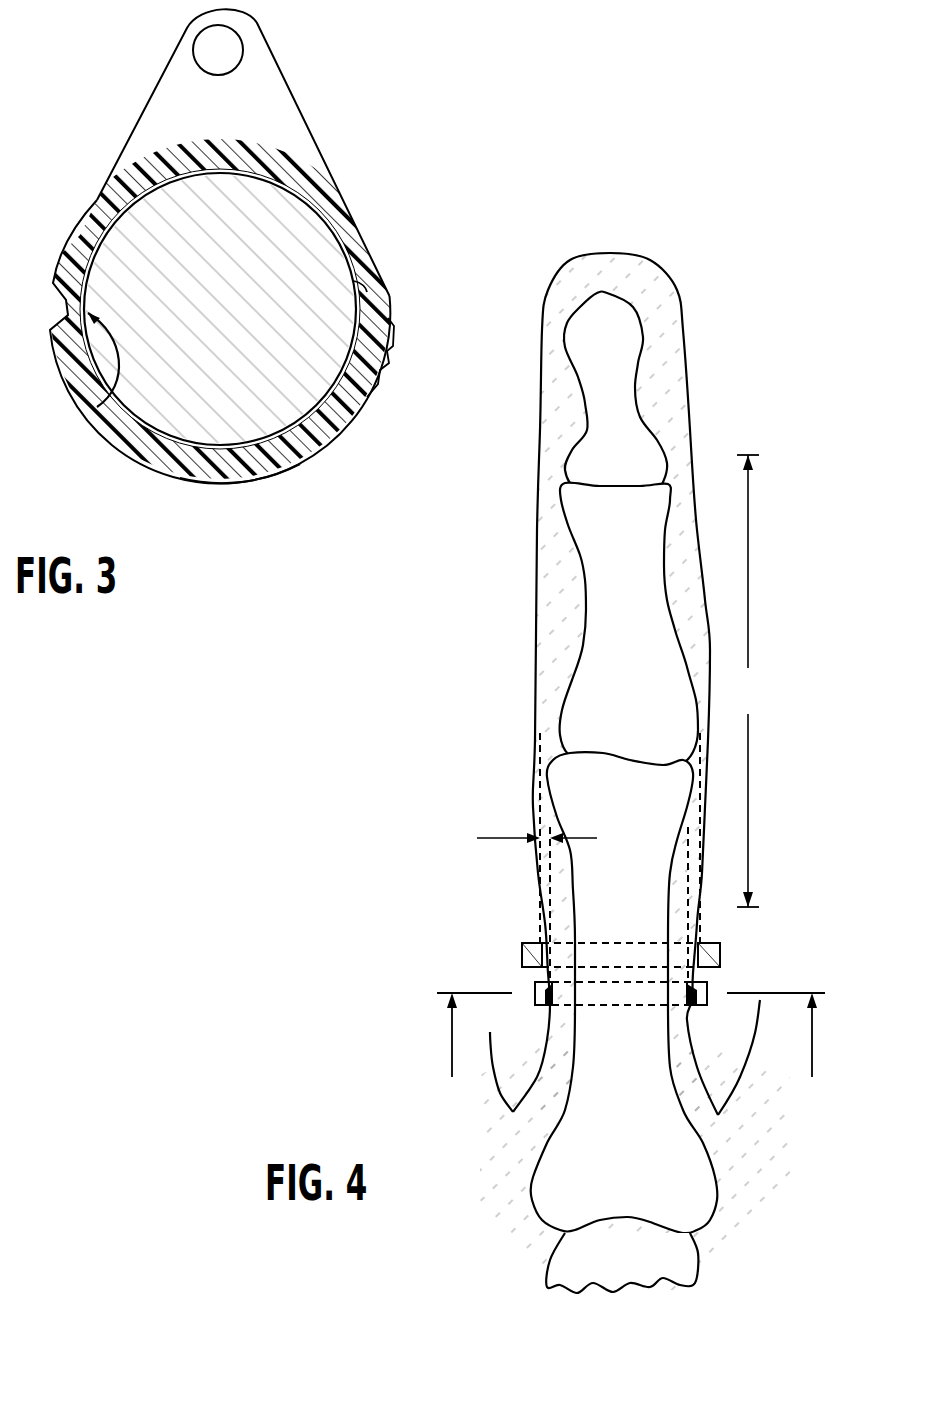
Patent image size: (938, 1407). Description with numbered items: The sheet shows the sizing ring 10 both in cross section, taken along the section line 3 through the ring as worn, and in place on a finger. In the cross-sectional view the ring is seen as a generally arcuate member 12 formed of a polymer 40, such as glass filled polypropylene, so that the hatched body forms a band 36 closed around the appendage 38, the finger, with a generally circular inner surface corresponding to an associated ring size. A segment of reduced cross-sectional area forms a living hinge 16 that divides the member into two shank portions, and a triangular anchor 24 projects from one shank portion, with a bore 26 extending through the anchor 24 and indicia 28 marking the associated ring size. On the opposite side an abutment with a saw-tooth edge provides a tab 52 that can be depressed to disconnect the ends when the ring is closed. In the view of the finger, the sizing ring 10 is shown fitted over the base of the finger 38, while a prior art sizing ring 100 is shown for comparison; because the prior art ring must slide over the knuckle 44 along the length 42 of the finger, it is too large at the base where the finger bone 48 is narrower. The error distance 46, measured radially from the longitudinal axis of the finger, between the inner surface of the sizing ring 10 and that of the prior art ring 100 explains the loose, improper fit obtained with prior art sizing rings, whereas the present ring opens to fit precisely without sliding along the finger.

In FIG. 3, the sizing ring 10 is at (367, 121).
In FIG. 4, the sizing ring 10 is at (708, 990).
In FIG. 3, the arcuate member 12 is at (290, 453).
In FIG. 3, the living hinge 16 is at (92, 417).
In FIG. 3, the anchor 24 is at (289, 75).
In FIG. 3, the bore 26 is at (195, 42).
In FIG. 3, the size indicia 28 is at (165, 104).
In FIG. 3, the band 36 is at (357, 233).
In FIG. 3, the appendage 38 is at (231, 319).
In FIG. 4, the appendage 38 is at (685, 373).
In FIG. 3, the polymer 40 is at (185, 467).
In FIG. 3, the tab 52 is at (387, 363).
In FIG. 4, the length 42 is at (747, 681).
In FIG. 4, the knuckle 44 is at (558, 782).
In FIG. 4, the error distance 46 is at (569, 857).
In FIG. 4, the finger bone 48 is at (633, 1073).
In FIG. 4, the prior art sizing ring 100 is at (522, 957).
In FIG. 4, the section line 3 is at (631, 1051).